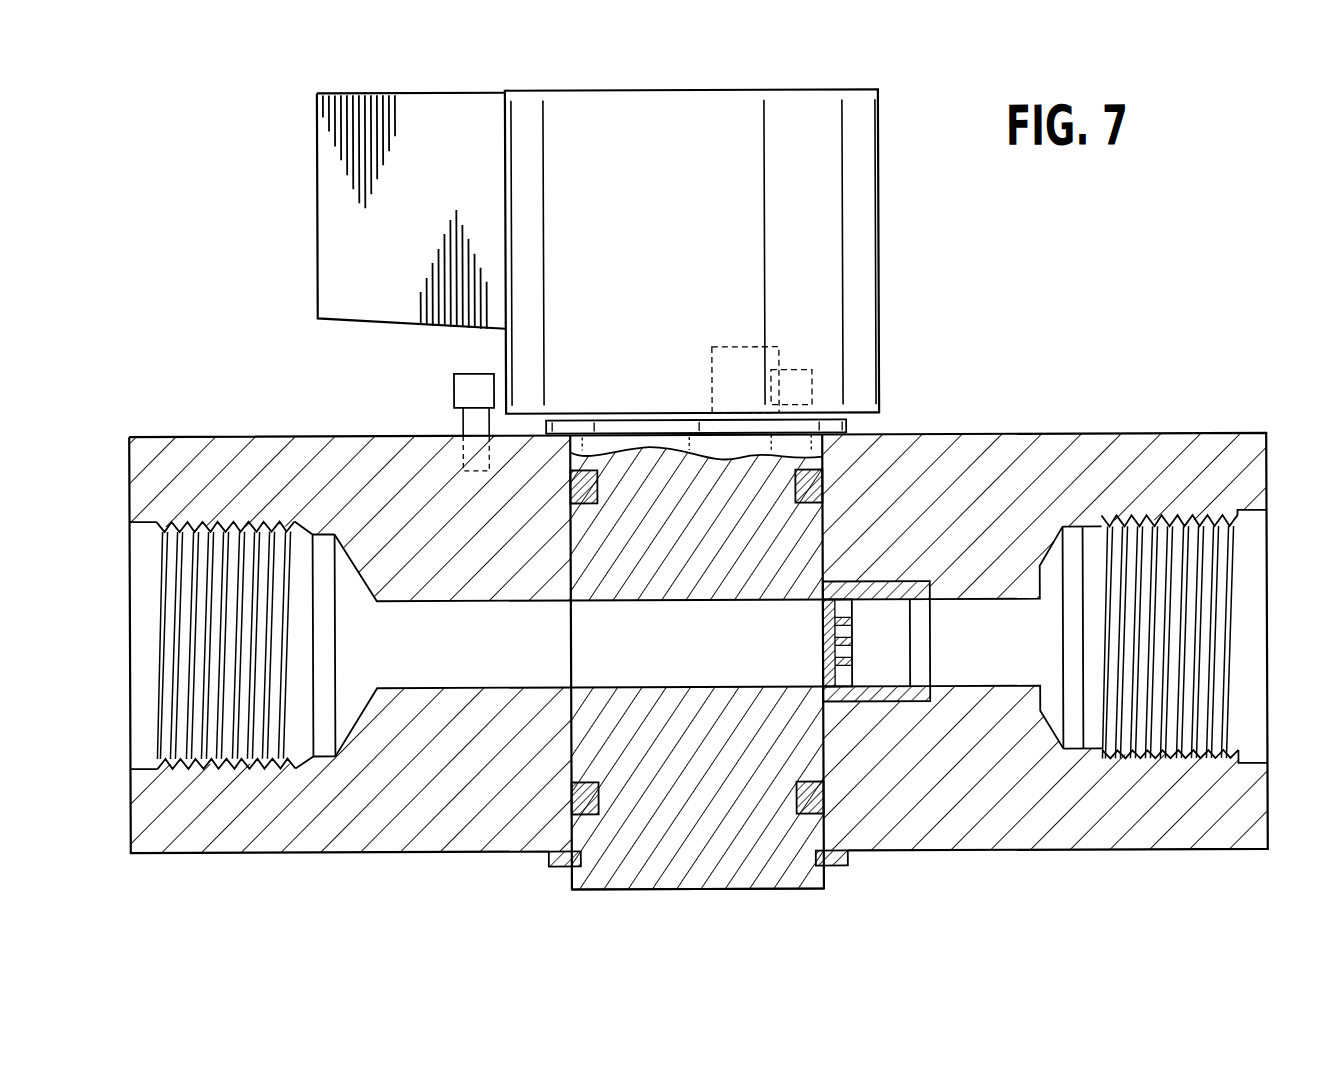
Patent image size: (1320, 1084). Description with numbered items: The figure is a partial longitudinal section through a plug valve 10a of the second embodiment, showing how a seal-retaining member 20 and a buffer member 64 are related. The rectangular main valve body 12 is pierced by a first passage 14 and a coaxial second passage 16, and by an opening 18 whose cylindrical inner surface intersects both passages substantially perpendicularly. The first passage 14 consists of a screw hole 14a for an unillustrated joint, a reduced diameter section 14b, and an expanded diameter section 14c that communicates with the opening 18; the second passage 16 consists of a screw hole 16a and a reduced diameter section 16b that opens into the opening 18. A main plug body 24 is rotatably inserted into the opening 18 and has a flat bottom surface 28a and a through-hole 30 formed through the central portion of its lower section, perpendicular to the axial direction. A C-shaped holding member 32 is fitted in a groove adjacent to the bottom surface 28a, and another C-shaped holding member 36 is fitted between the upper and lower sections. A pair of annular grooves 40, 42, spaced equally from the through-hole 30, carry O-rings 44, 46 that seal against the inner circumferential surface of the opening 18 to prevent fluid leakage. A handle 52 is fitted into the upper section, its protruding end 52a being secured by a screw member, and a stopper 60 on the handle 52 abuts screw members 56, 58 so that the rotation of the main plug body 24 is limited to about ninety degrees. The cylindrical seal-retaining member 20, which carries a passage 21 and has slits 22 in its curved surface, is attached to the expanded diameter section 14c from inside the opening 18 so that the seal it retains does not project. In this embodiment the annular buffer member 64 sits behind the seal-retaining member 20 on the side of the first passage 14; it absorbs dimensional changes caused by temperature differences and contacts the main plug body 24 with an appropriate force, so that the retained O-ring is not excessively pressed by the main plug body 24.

The plug valve 10a is at (1197, 190).
The main valve body 12 is at (1144, 426).
The first passage 14 is at (1180, 510).
The screw hole 14a is at (1200, 758).
The reduced diameter section 14b is at (957, 689).
The expanded diameter section 14c is at (893, 704).
The second passage 16 is at (219, 516).
The screw hole 16a is at (198, 767).
The reduced diameter section 16b is at (415, 687).
The opening 18 is at (806, 455).
The seal-retaining member 20 is at (890, 576).
The passage 21 is at (918, 601).
The slits 22 is at (821, 640).
The main plug body 24 is at (754, 889).
The bottom surface 28a is at (690, 890).
The through-hole 30 is at (697, 644).
The holding member 32 is at (556, 868).
The holding member 36 is at (676, 432).
The annular groove 40 is at (636, 457).
The annular groove 42 is at (600, 812).
The O-ring 44 is at (586, 816).
The O-ring 46 is at (622, 482).
The handle 52 is at (863, 250).
The protruding end 52a is at (353, 238).
The screw member 56 is at (455, 386).
The screw member 58 is at (803, 371).
The stopper 60 is at (712, 352).
The buffer member 64 is at (920, 704).